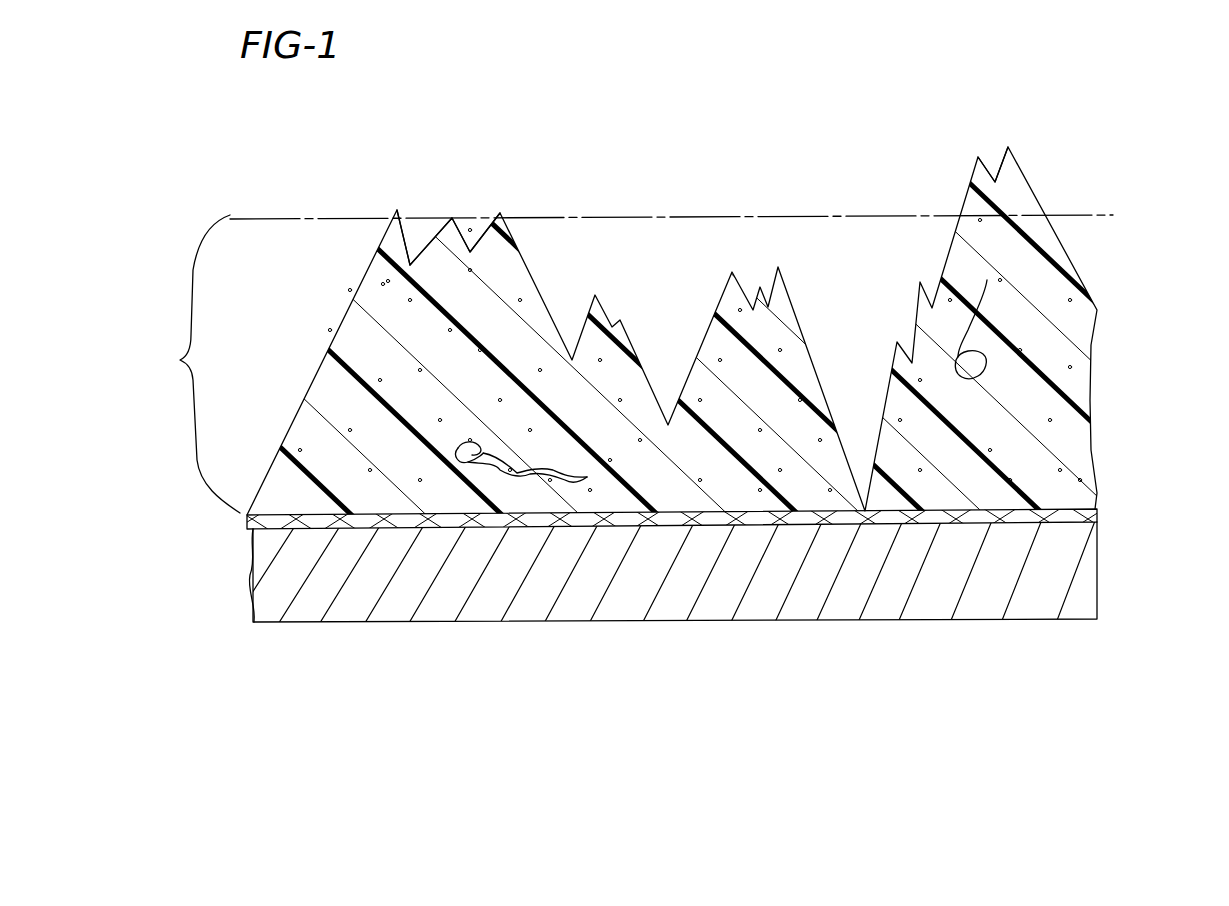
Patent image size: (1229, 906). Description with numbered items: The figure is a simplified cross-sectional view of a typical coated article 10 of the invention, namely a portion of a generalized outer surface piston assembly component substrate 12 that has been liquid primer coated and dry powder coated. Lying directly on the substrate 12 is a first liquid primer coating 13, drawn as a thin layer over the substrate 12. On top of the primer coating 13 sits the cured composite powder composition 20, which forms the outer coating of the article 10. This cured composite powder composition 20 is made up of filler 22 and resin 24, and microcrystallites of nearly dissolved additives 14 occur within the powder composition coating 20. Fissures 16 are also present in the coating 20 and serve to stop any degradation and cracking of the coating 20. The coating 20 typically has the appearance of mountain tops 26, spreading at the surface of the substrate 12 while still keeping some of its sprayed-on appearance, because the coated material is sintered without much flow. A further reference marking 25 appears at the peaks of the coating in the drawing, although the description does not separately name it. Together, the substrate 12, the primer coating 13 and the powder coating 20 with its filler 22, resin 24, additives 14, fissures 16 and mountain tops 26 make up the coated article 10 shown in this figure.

The coated article 10 is at (825, 681).
The piston assembly component substrate 12 is at (1088, 557).
The first liquid primer coating 13 is at (1097, 510).
The microcrystallites of nearly dissolved additives 14 is at (382, 283).
The fissures 16 is at (482, 513).
The cured composite powder composition 20 is at (190, 364).
The filler 22 is at (368, 500).
The resin 24 is at (645, 257).
The cutting tip of abrasive grain 25 is at (480, 243).
The mountain tops 26 is at (977, 172).